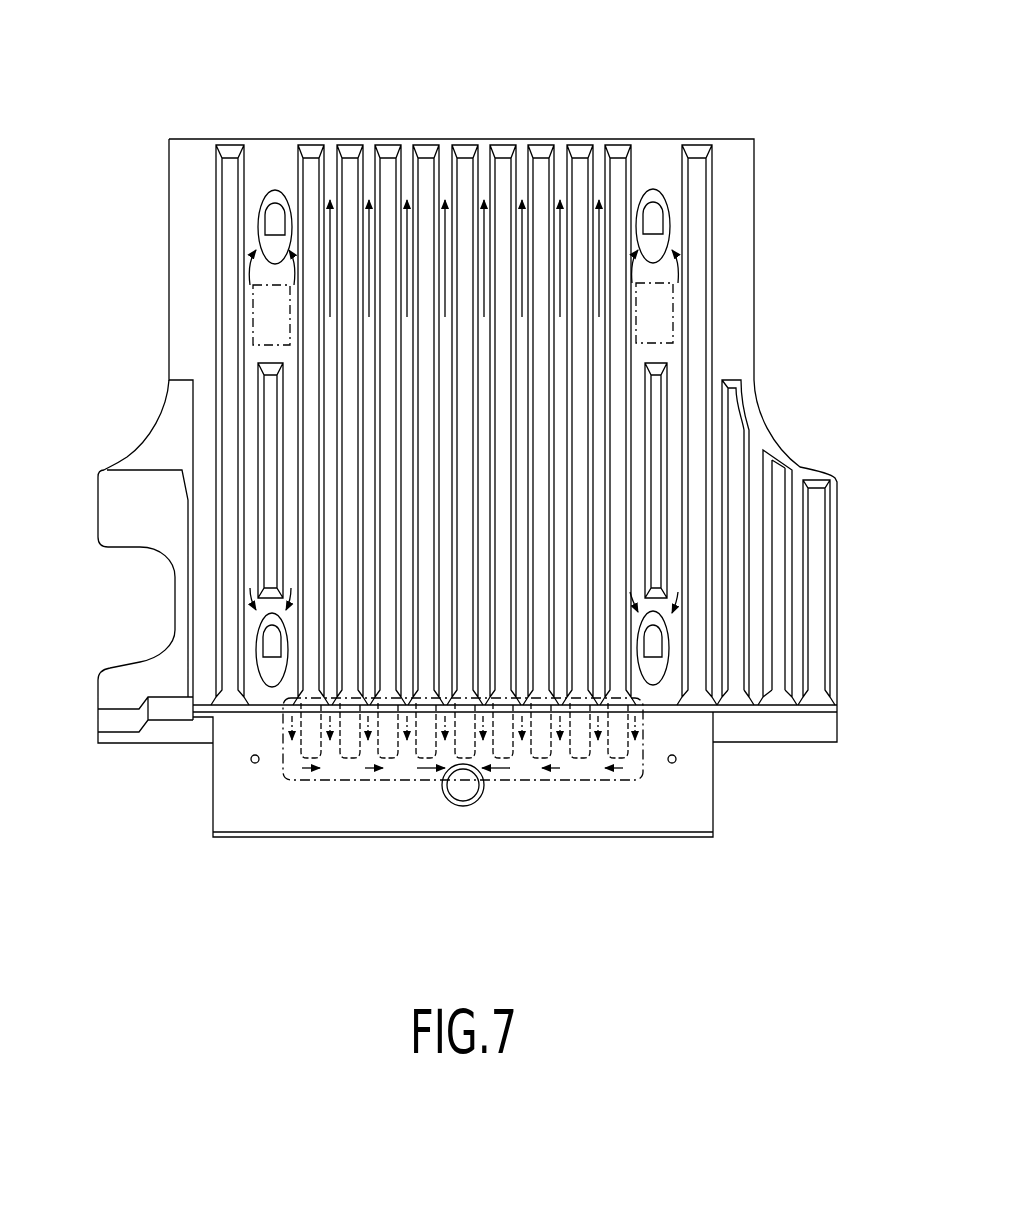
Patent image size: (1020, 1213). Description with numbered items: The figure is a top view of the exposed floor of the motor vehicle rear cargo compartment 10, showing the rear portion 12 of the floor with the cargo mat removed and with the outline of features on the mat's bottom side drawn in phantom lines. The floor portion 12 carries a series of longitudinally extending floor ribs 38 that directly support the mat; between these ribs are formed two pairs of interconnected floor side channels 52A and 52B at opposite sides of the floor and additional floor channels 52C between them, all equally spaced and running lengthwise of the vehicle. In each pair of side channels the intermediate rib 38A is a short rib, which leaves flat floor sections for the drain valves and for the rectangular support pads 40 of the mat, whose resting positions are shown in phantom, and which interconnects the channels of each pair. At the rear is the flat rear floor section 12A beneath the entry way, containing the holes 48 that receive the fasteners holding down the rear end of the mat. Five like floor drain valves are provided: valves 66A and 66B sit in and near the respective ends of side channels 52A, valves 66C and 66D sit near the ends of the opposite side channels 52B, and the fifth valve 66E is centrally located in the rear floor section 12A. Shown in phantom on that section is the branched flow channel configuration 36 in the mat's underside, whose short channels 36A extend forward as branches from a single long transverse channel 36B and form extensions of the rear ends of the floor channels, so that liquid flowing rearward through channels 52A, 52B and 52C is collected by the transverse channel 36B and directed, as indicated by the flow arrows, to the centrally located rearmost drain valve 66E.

The motor vehicle rear cargo compartment 10 is at (122, 165).
The rear portion of floor 12 is at (682, 353).
The flat rear floor section 12A is at (257, 805).
The branched flow channel configuration 36 is at (654, 789).
The short channels 36A is at (330, 780).
The long transverse channel 36B is at (522, 780).
The floor ribs 38 is at (347, 183).
The intermediate rib 38A is at (270, 520).
The support pads 40 is at (263, 315).
The holes 48 is at (253, 763).
The floor side channels 52A is at (290, 463).
The floor side channels 52B is at (675, 515).
The additional floor channels 52C is at (333, 160).
The floor drain valve 66A is at (277, 190).
The floor drain valve 66B is at (262, 648).
The floor drain valve 66C is at (655, 190).
The floor drain valve 66D is at (655, 668).
The rearmost floor drain valve 66E is at (458, 805).